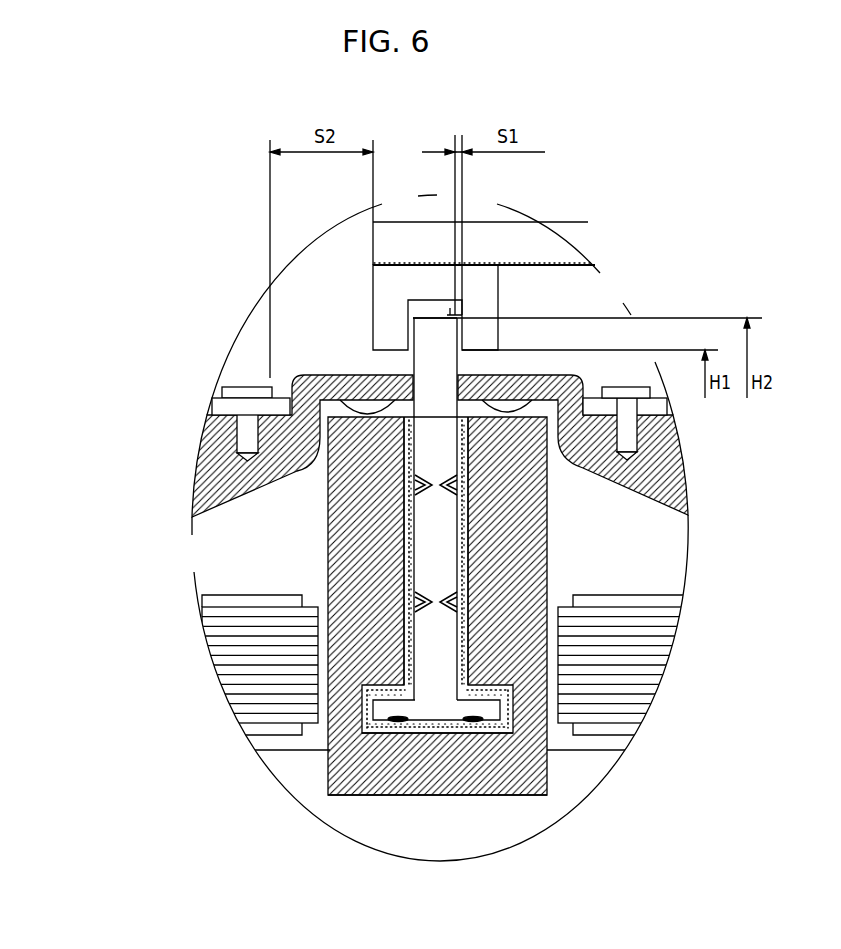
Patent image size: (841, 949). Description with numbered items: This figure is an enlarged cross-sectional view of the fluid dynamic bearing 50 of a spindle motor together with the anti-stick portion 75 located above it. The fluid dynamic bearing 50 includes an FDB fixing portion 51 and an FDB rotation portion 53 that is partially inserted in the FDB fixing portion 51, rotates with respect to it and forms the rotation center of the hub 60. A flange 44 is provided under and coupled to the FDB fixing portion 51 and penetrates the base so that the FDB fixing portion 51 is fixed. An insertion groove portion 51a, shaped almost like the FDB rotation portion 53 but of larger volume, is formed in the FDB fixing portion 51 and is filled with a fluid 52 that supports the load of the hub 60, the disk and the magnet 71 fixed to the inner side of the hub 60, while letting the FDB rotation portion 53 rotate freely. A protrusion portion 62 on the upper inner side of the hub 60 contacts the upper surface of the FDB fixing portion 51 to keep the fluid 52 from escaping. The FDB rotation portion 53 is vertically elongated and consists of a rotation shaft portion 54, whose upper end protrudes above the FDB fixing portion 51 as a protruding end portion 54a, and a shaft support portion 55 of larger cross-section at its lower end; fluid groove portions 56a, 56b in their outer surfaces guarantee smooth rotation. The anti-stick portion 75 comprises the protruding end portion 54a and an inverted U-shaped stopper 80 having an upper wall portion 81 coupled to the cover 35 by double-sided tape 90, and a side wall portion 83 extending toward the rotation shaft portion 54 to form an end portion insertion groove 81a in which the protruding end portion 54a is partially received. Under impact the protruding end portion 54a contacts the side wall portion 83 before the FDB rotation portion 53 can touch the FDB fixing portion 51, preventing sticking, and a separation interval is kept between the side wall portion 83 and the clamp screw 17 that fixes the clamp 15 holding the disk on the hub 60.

The clamp 15 is at (653, 410).
The clamp screw 17 is at (628, 438).
The cover 35 is at (548, 247).
The flange 44 is at (471, 822).
The fluid dynamic bearing 50 is at (60, 582).
The FDB fixing portion 51 is at (412, 783).
The insertion groove portion 51a is at (467, 574).
The fluid 52 is at (467, 540).
The FDB rotation portion 53 is at (112, 418).
The rotation shaft portion 54 is at (433, 418).
The protruding end portion 54a is at (427, 352).
The shaft support portion 55 is at (383, 705).
The fluid groove portion 56a is at (410, 497).
The fluid groove portion 56b is at (400, 725).
The hub 60 is at (653, 487).
The protrusion portion 62 is at (510, 407).
The magnet 71 is at (650, 632).
The anti-stick portion 75 is at (153, 235).
The stopper 80 is at (207, 215).
The upper wall portion 81 is at (413, 283).
The end portion insertion groove 81a is at (455, 312).
The side wall portion 83 is at (395, 325).
The double-sided tape 90 is at (488, 267).